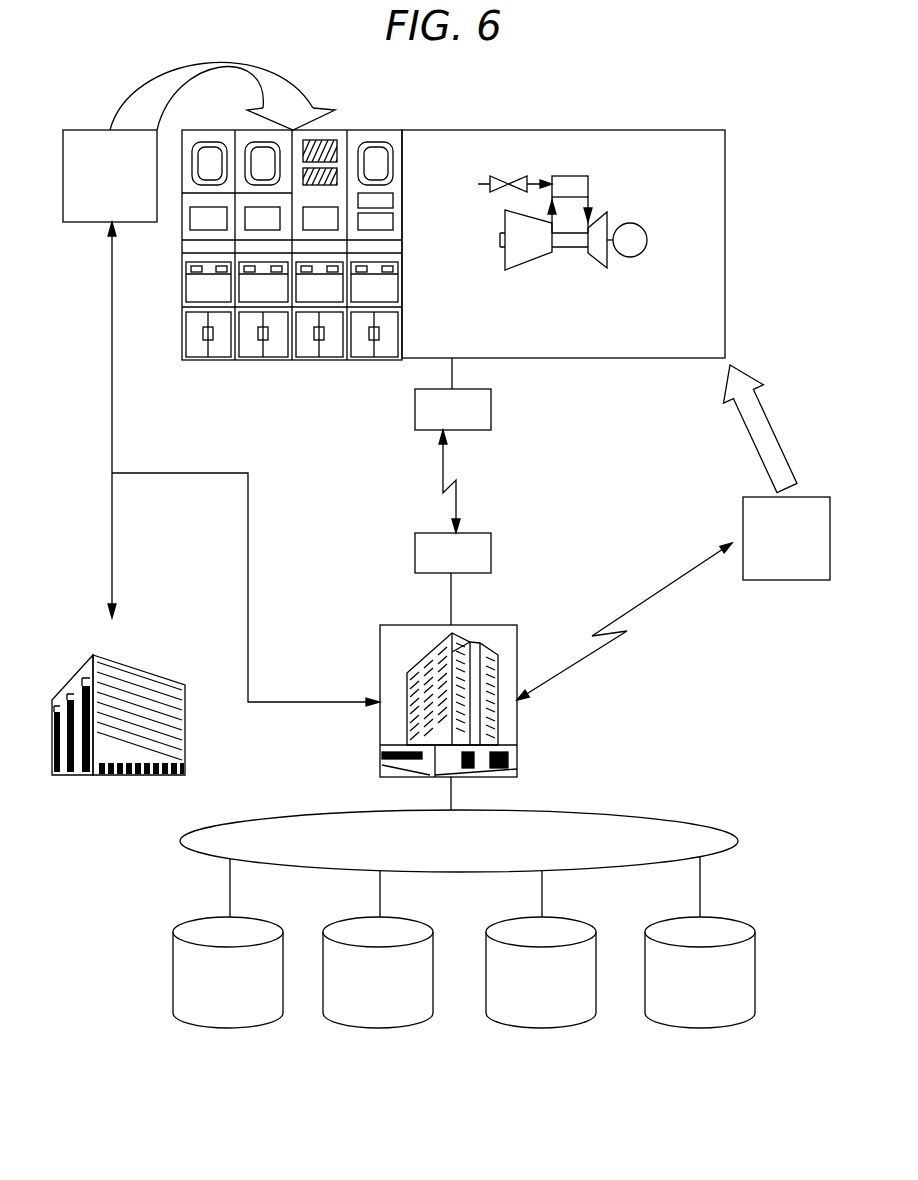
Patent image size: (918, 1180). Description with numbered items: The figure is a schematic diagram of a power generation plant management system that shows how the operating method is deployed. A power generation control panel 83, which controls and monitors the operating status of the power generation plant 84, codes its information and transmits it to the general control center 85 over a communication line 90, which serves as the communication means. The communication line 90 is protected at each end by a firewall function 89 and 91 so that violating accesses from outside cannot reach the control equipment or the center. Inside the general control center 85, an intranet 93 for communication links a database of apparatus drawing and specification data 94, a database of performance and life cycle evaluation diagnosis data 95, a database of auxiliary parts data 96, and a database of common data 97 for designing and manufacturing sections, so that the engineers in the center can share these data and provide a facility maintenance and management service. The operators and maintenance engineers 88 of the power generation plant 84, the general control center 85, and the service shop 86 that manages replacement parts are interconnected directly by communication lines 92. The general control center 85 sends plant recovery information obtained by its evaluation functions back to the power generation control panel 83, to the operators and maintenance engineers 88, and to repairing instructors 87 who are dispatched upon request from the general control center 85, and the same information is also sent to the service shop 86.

The power generation control panel 83 is at (293, 360).
The power generation plant 84 is at (645, 360).
The general control center 85 is at (380, 645).
The service shop 86 is at (127, 775).
The repairing instructors 87 is at (786, 580).
The operators and maintenance engineers 88 is at (83, 222).
The firewall function 89 is at (491, 409).
The communication line 90 is at (440, 477).
The firewall function 91 is at (491, 548).
The communication lines 92 is at (248, 565).
The intranet 93 is at (677, 810).
The database of apparatus drawing and specification data 94 is at (218, 1028).
The database of performance and life cycle evaluation diagnosis data 95 is at (368, 1028).
The auxiliary parts data 96 is at (531, 1028).
The database of common data for designing and manufacturing sections 97 is at (690, 1028).